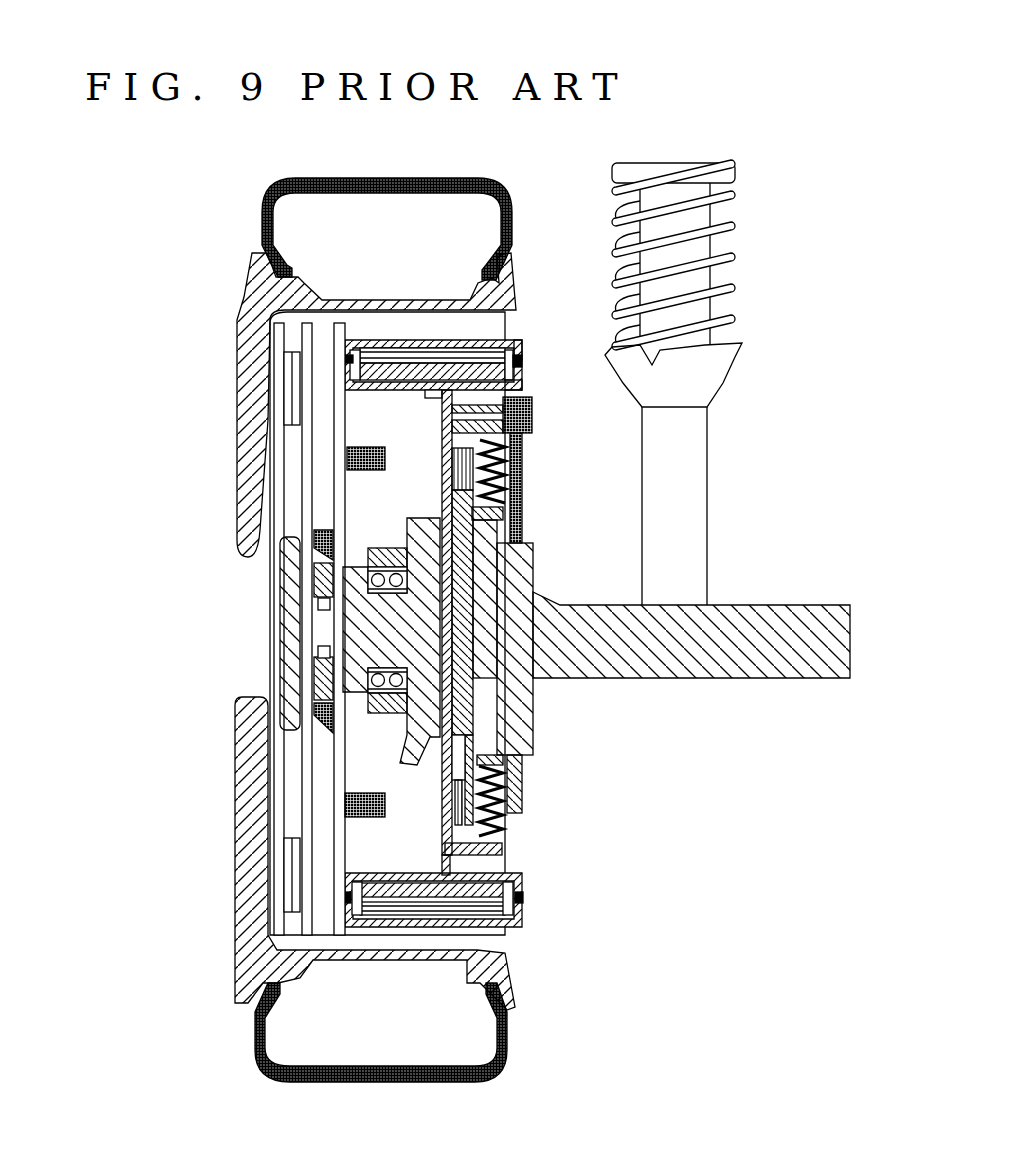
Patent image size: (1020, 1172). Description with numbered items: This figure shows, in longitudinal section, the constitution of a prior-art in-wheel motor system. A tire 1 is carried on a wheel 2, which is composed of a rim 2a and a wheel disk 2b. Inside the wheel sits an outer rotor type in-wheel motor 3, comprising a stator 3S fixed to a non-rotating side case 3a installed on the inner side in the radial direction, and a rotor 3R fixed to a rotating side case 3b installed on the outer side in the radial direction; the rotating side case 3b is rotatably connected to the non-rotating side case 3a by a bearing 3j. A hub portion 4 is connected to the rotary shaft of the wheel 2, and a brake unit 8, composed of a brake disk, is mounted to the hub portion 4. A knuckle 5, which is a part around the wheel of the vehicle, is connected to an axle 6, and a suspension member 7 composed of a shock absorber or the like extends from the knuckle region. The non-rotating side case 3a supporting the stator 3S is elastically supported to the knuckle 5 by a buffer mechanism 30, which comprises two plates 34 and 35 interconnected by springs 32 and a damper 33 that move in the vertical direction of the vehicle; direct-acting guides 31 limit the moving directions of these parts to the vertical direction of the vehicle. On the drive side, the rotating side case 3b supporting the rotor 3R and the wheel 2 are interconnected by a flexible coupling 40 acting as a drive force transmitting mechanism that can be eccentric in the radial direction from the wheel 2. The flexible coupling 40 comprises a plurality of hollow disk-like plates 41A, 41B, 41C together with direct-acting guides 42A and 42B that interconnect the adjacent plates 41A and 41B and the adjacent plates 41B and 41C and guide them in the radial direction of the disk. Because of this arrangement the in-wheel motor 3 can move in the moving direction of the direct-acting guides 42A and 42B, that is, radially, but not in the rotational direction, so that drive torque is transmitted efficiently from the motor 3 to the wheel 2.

The tire 1 is at (452, 178).
The wheel 2 is at (320, 589).
The rim 2a is at (257, 260).
The wheel disk 2b is at (238, 540).
The in-wheel motor 3 is at (435, 581).
The stator 3S is at (390, 365).
The rotor 3R is at (450, 368).
The non-rotating side case 3a is at (522, 380).
The rotating side case 3b is at (524, 344).
The bearing 3j is at (523, 362).
The hub portion 4 is at (302, 593).
The knuckle 5 is at (420, 767).
The axle 6 is at (752, 612).
The suspension member 7 is at (727, 300).
The brake unit 8 is at (360, 805).
The buffer mechanism 30 is at (500, 634).
The direct-acting guides 31 is at (442, 450).
The springs 32 is at (505, 495).
The damper 33 is at (533, 583).
The plate 34 is at (442, 477).
The plate 35 is at (472, 520).
The flexible coupling 40 is at (221, 598).
The hollow disk-like plate 41A is at (290, 720).
The hollow disk-like plate 41B is at (307, 465).
The hollow disk-like plate 41C is at (275, 353).
The direct-acting guide 42A is at (316, 632).
The direct-acting guide 42B is at (278, 381).